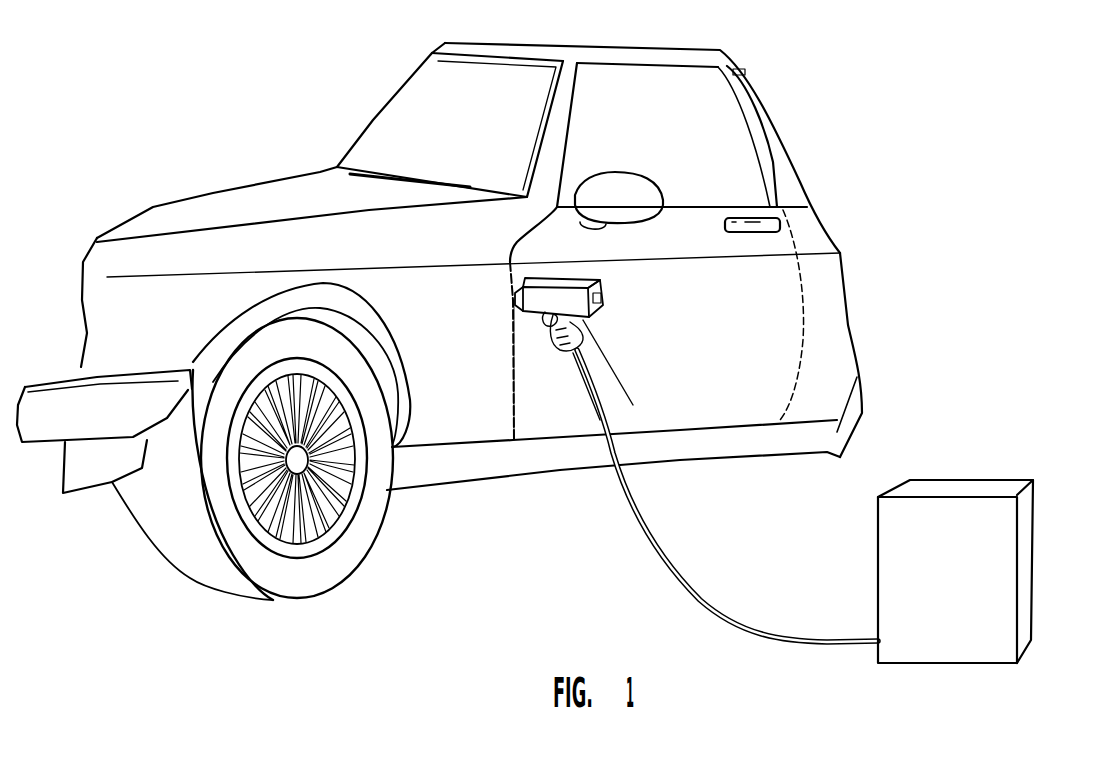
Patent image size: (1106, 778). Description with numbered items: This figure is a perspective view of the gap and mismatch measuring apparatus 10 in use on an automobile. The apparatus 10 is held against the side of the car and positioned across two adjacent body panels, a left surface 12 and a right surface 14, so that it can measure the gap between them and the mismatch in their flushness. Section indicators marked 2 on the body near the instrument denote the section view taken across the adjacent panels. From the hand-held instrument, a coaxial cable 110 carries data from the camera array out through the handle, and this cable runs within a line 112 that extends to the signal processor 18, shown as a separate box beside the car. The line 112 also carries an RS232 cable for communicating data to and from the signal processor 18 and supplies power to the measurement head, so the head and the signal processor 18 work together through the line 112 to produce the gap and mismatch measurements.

The section line 2- 2 is at (493, 300).
The apparatus for measuring gap and mismatch 10 is at (605, 290).
The left surface 12 is at (484, 366).
The right surface 14 is at (681, 378).
The signal processor 18 is at (1013, 487).
The coaxial cable 110 is at (663, 545).
The line 112 is at (727, 496).